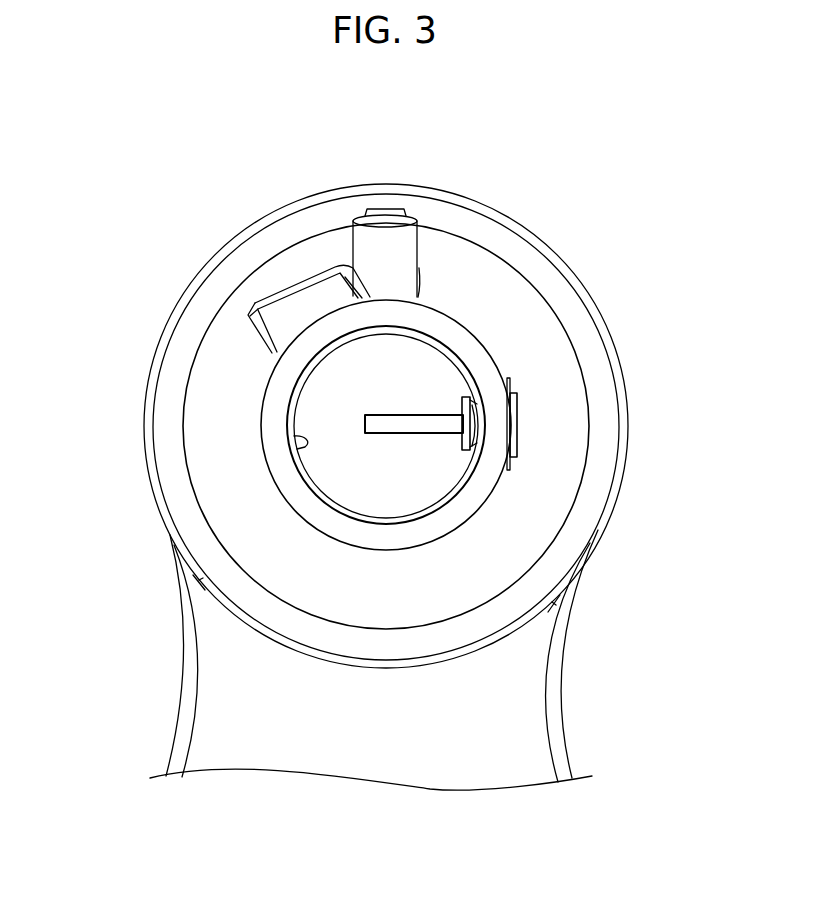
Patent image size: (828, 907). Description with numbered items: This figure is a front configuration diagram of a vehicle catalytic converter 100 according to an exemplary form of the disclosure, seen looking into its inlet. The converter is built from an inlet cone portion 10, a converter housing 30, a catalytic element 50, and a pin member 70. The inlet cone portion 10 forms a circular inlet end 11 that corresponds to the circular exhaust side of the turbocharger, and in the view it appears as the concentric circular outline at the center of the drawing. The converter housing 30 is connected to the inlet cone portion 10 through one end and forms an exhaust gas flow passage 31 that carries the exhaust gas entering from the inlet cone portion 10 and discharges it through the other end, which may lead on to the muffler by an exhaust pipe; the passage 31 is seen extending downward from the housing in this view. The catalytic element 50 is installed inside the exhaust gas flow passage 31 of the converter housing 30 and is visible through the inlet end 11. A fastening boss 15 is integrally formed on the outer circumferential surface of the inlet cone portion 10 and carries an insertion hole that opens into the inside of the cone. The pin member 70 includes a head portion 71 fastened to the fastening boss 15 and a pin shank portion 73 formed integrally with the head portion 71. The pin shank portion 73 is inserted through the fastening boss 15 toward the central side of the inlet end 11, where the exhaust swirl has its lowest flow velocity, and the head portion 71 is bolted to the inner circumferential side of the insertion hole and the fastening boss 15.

The vehicle catalytic converter 100 is at (404, 137).
The converter housing 30 is at (597, 288).
The exhaust gas flow passage 31 is at (226, 667).
The inlet cone portion 10 is at (252, 463).
The catalytic element 50 is at (320, 390).
The inlet end 11 is at (305, 440).
The pin member 70 is at (423, 410).
The pin shank portion 73 is at (432, 428).
The fastening boss 15 is at (512, 383).
The head portion 71 is at (518, 445).